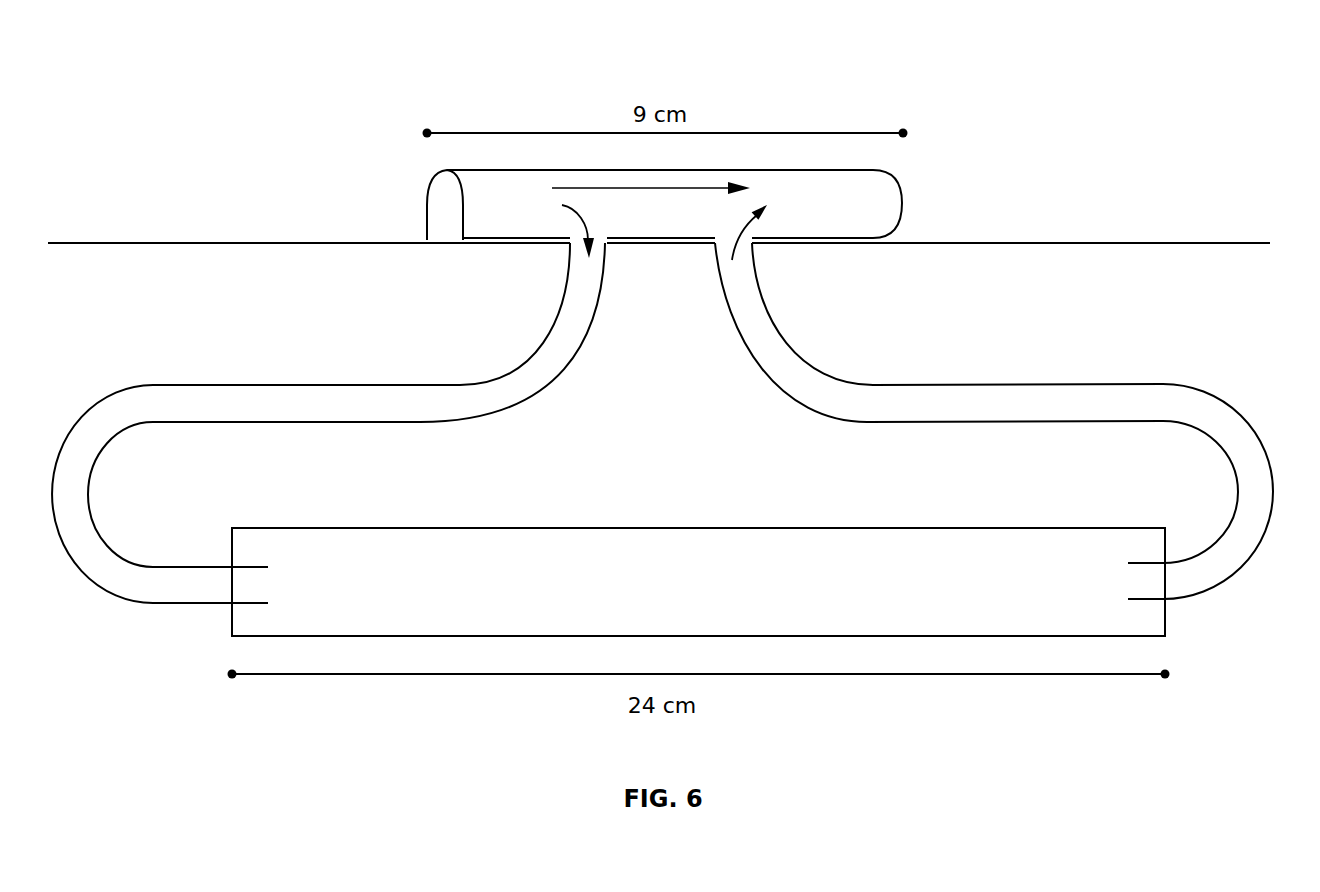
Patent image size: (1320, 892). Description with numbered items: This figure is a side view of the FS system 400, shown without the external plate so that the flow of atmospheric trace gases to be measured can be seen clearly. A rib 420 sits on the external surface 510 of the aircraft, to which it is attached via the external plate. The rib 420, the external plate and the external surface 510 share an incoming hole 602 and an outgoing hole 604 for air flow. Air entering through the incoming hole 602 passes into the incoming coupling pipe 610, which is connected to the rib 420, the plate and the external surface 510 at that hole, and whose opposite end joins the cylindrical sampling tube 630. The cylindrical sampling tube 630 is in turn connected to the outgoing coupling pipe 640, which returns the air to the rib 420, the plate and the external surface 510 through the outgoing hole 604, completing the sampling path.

The FS system 400 is at (160, 127).
The rib 420 is at (897, 181).
The external surface of the aircraft 510 is at (992, 244).
The incoming hole 602 is at (598, 242).
The outgoing hole 604 is at (723, 242).
The incoming coupling pipe 610 is at (420, 424).
The cylindrical sampling tube 630 is at (641, 606).
The outgoing coupling pipe 640 is at (1266, 534).